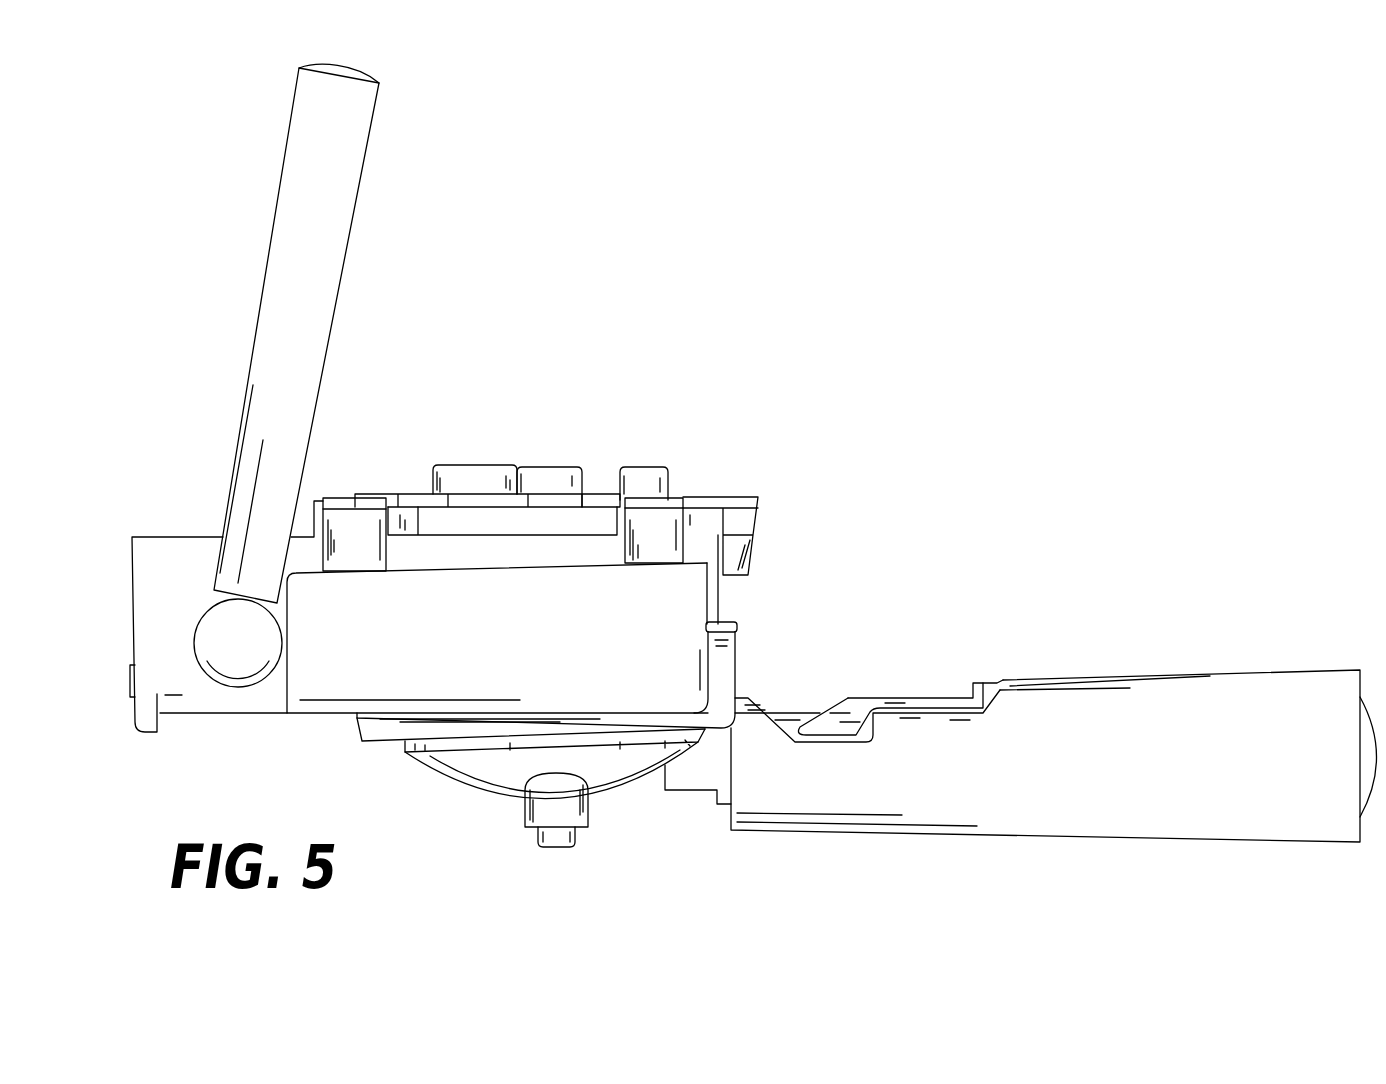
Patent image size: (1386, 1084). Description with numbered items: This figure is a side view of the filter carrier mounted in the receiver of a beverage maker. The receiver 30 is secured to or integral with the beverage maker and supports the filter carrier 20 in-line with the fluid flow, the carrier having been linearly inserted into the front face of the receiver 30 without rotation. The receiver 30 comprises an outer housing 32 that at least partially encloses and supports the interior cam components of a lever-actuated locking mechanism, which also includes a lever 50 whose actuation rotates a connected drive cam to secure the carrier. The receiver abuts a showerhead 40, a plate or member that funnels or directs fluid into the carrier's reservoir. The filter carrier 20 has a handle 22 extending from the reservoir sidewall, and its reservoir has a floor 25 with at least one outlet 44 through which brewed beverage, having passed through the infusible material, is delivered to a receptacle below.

The filter carrier 20 is at (1054, 697).
The handle 22 is at (1128, 775).
The floor 25 is at (487, 770).
The receiver 30 is at (763, 657).
The housing 32 is at (477, 653).
The showerhead 40 is at (670, 466).
The outlet 44 is at (557, 846).
The lever 50 is at (328, 354).